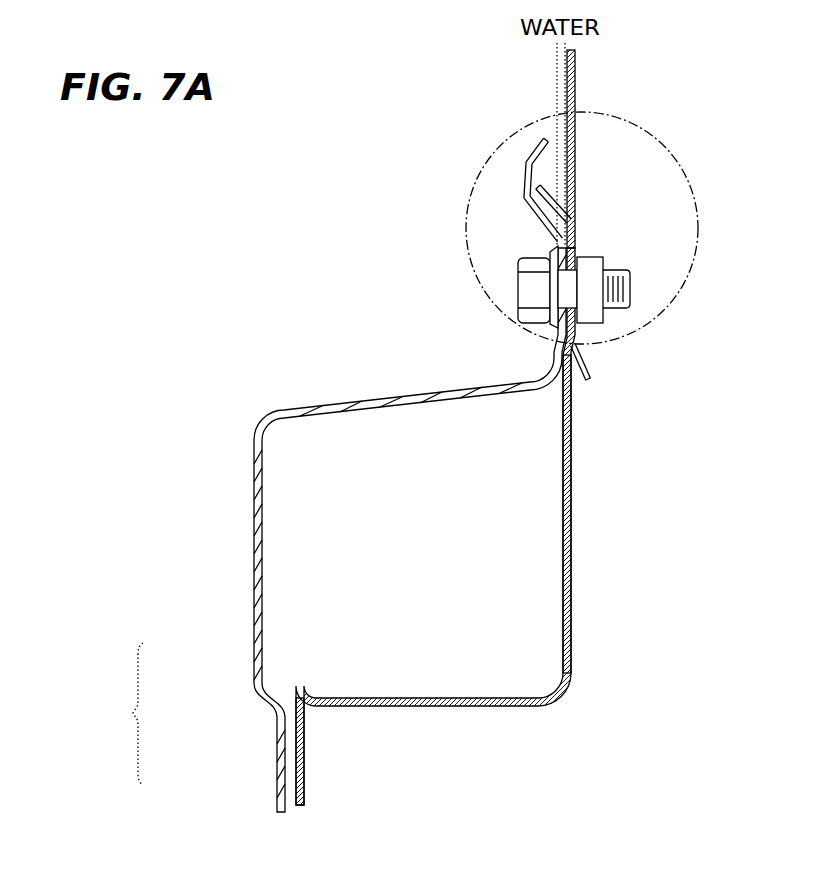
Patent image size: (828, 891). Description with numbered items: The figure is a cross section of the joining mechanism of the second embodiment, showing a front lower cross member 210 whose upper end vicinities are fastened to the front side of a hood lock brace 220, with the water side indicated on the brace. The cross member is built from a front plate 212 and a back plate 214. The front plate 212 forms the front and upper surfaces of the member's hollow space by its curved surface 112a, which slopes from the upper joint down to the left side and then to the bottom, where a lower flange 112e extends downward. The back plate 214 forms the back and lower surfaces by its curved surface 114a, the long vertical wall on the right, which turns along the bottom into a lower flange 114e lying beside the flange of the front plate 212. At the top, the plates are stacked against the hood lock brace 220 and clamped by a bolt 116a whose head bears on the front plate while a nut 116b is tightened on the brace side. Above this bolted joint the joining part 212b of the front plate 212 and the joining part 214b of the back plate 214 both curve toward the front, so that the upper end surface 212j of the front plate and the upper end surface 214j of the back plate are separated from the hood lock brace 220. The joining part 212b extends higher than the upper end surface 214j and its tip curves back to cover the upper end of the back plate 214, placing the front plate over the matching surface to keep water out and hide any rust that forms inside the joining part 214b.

The front lower cross member 210 is at (122, 730).
The front plate 212 is at (357, 434).
The back plate 214 is at (405, 453).
The hood lock brace 220 is at (594, 77).
The upper end surface of the front plate 212j is at (547, 137).
The upper end surface of the back plate 214j is at (527, 162).
The joining part of the front plate 212b is at (528, 201).
The joining part of the back plate 214b is at (550, 226).
The bolt 116a is at (518, 292).
The nut 116b is at (591, 316).
The curved surface 112a is at (352, 400).
The curved surface 114a is at (571, 553).
The lower flange 112e is at (277, 776).
The lower flange 114e is at (305, 785).